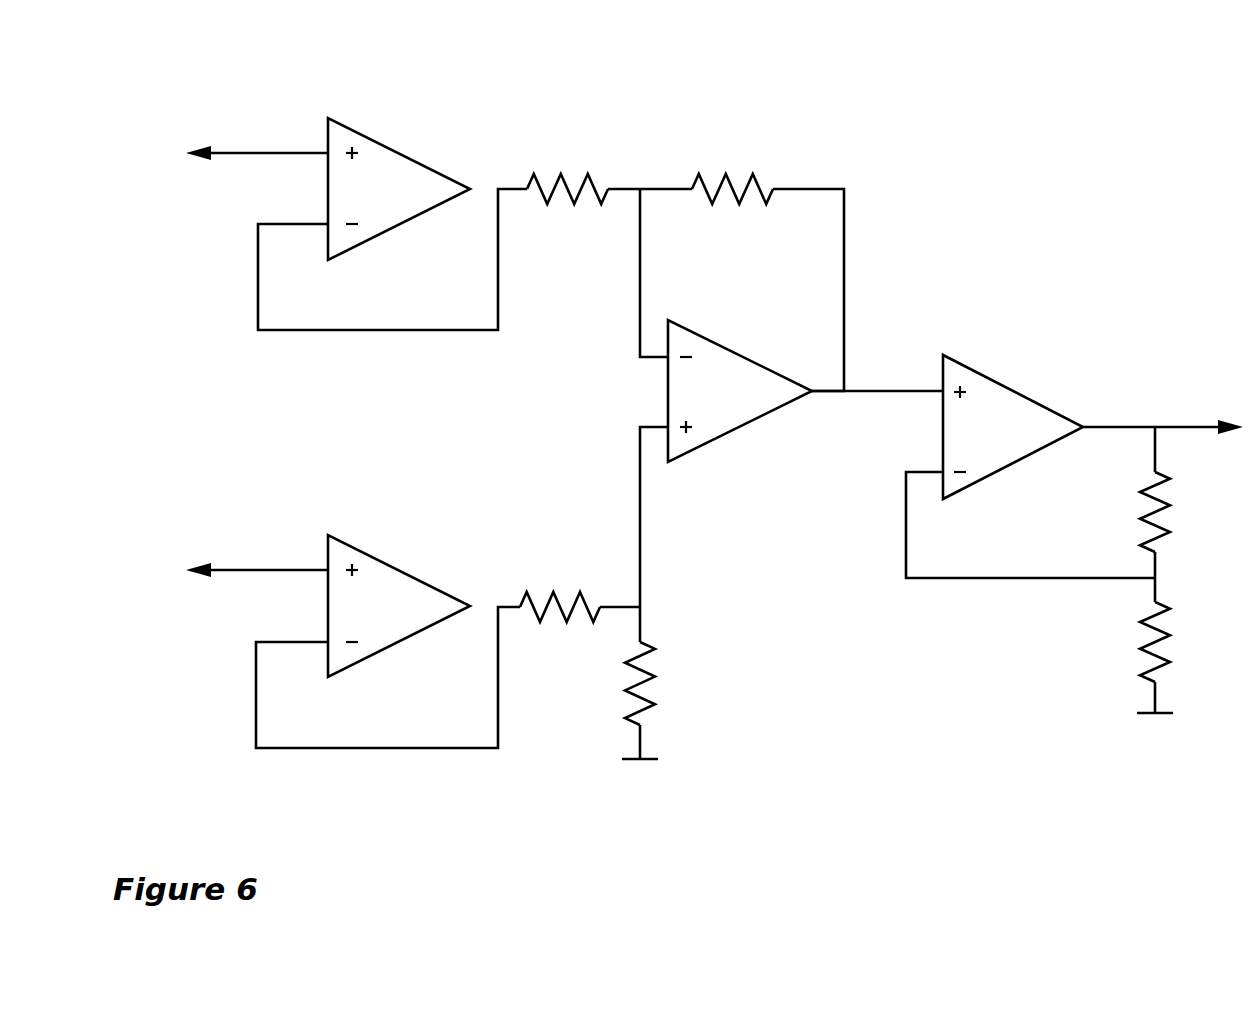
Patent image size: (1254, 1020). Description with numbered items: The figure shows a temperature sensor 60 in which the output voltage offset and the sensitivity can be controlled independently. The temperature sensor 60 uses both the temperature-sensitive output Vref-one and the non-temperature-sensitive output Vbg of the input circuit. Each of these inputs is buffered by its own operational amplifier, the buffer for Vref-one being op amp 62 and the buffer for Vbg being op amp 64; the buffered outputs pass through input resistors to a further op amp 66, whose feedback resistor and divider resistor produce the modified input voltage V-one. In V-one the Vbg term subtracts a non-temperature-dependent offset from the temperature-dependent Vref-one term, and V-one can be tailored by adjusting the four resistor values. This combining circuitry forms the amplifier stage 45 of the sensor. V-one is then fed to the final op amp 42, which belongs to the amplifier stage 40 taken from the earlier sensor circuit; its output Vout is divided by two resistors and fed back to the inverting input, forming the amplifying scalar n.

The temperature sensor 60 is at (972, 130).
The first buffer amplifier 62 is at (397, 210).
The second buffer amplifier 64 is at (393, 620).
The differential amplifier 66 is at (731, 414).
The operational amplifier 42 is at (1007, 452).
The amplifier stage 40 is at (1012, 665).
The amplifier stage 45 is at (1225, 812).